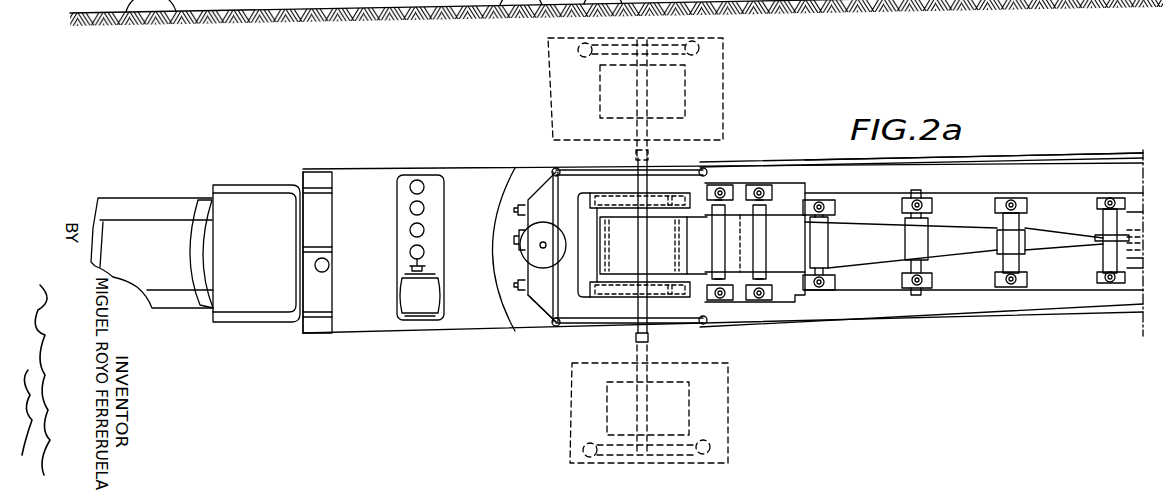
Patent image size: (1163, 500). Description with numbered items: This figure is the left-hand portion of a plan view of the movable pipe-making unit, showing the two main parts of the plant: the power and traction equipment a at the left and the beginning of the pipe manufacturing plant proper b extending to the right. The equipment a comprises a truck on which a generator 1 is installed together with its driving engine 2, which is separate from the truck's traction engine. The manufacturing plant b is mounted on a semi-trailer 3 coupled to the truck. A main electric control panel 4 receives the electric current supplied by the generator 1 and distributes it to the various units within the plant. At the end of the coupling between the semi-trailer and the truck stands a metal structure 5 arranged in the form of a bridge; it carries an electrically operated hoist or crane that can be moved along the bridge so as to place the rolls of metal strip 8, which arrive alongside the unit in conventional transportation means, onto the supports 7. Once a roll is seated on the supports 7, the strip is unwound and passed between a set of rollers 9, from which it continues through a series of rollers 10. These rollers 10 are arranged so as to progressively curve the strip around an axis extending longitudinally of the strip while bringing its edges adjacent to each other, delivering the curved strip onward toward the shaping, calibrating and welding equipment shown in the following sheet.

The power and traction equipment a is at (341, 158).
The pipe manufacturing plant proper b is at (1009, 157).
The generator 1 is at (432, 295).
The driving engine 2 is at (432, 183).
The semi-trailer 3 is at (745, 166).
The main electric control panel 4 is at (522, 205).
The metal structure 5 is at (548, 310).
The supports 7 is at (680, 192).
The rolls of metal strip 8 is at (628, 262).
The set of rollers 9 is at (762, 246).
The series of rollers 10 is at (925, 245).